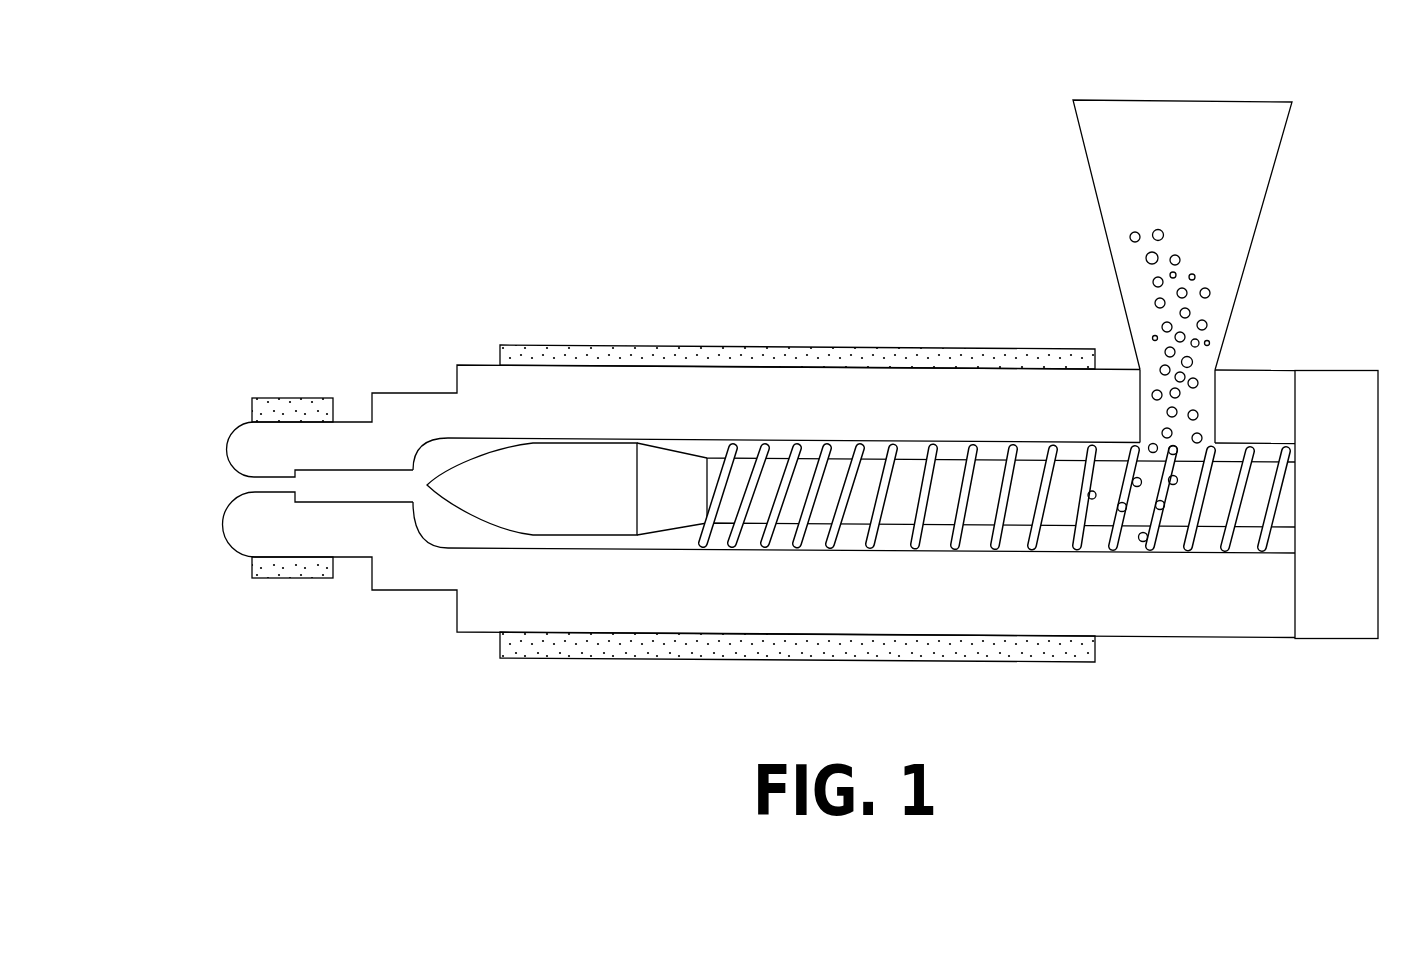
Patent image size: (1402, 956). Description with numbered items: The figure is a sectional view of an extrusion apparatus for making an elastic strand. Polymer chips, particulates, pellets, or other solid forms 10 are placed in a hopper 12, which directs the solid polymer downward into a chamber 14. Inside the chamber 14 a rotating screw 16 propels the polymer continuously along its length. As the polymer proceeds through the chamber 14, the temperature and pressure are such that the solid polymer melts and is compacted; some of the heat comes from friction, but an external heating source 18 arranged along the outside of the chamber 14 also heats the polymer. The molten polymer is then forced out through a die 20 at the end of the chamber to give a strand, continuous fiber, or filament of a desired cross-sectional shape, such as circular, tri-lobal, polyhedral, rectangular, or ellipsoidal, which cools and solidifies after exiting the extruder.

The solid polymer forms 10 is at (1180, 260).
The hopper 12 is at (1215, 163).
The chamber 14 is at (957, 452).
The rotating screw 16 is at (890, 488).
The external heating source 18 is at (280, 407).
The die 20 is at (255, 483).